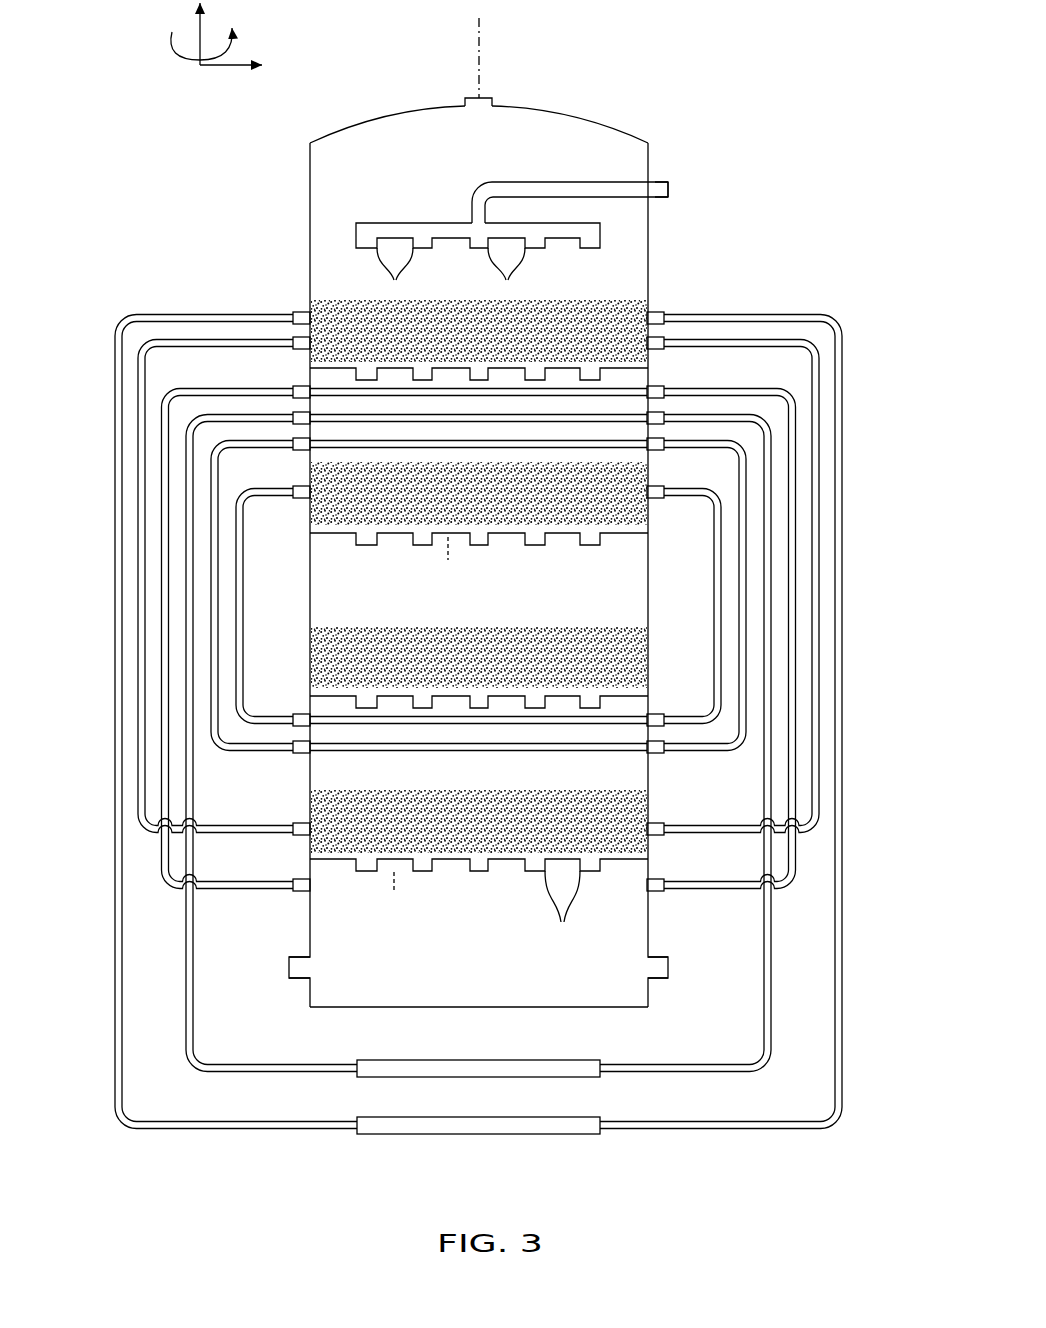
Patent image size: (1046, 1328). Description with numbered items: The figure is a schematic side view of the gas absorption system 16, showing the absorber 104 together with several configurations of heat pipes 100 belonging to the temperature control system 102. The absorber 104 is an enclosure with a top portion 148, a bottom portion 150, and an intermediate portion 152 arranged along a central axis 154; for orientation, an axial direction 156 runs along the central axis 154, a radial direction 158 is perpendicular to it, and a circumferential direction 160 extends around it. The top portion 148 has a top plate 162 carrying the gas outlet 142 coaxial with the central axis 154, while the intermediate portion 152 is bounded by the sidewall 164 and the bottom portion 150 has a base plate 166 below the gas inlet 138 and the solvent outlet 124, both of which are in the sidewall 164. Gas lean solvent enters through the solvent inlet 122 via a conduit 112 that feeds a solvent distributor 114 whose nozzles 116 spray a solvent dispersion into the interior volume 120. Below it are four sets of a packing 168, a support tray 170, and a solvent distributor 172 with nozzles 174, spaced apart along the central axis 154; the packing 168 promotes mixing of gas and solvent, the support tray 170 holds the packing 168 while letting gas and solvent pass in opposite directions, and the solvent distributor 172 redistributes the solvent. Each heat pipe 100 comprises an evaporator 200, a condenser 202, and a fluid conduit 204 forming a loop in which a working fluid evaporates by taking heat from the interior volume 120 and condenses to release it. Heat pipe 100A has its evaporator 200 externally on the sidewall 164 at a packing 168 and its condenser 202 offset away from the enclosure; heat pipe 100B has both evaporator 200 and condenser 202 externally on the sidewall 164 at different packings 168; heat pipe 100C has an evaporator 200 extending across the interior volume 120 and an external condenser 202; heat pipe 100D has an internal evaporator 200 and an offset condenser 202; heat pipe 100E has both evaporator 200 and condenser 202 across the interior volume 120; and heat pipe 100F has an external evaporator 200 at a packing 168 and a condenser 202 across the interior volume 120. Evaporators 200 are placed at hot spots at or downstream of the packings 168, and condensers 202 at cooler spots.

The gas absorption system 16 is at (781, 40).
The heat pipes 100 is at (132, 287).
The heat pipe 100A is at (108, 338).
The heat pipe 100B is at (134, 386).
The heat pipe 100C is at (157, 418).
The heat pipe 100D is at (182, 443).
The heat pipe 100E is at (208, 486).
The heat pipe 100F is at (232, 538).
The temperature control system 102 is at (841, 1146).
The absorber 104 is at (628, 42).
The conduit 112 is at (548, 182).
The solvent distributor 114 is at (413, 223).
The nozzles 116 is at (456, 273).
The interior volume 120 is at (362, 168).
The solvent inlet 122 is at (660, 182).
The solvent outlet 124 is at (668, 978).
The gas inlet 138 is at (290, 975).
The gas outlet 142 is at (497, 103).
The top portion 148 is at (282, 154).
The bottom portion 150 is at (345, 1026).
The intermediate portion 152 is at (282, 277).
The central axis 154 is at (482, 52).
The axial direction 156 is at (198, 38).
The radial direction 158 is at (222, 67).
The circumferential direction 160 is at (180, 58).
The top plate 162 is at (600, 118).
The sidewall 164 is at (310, 218).
The base plate 166 is at (480, 1007).
The packing 168 is at (547, 310).
The support tray 170 is at (427, 725).
The solvent distributor 172 is at (500, 536).
The nozzles 174 is at (598, 545).
The evaporator 200 is at (293, 312).
The condenser 202 is at (468, 752).
The fluid conduit 204 is at (222, 750).